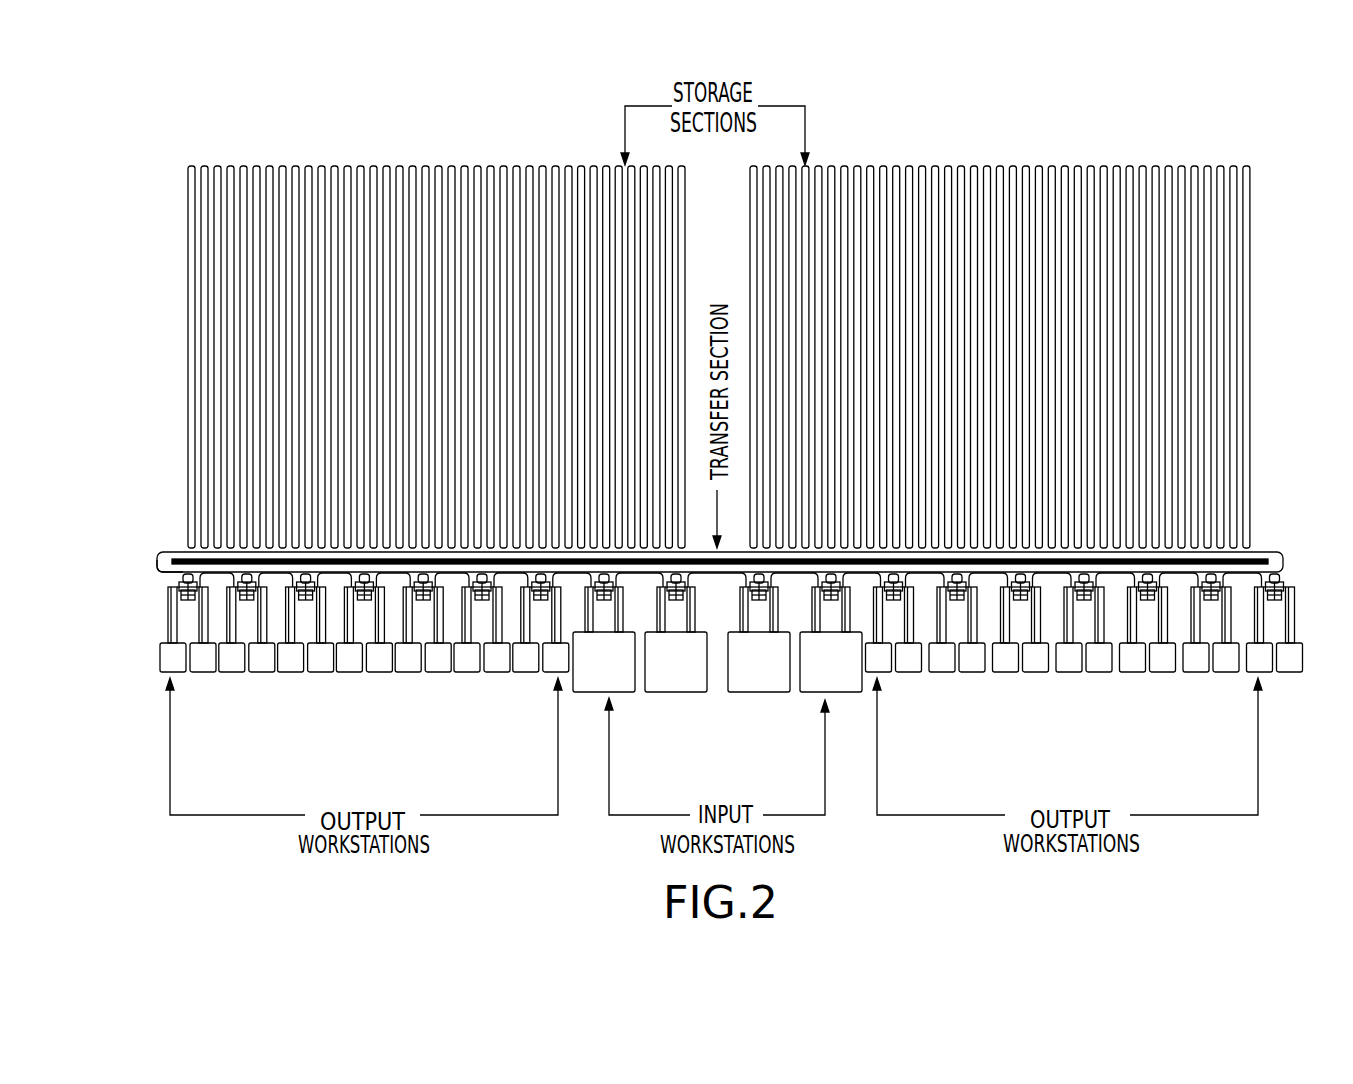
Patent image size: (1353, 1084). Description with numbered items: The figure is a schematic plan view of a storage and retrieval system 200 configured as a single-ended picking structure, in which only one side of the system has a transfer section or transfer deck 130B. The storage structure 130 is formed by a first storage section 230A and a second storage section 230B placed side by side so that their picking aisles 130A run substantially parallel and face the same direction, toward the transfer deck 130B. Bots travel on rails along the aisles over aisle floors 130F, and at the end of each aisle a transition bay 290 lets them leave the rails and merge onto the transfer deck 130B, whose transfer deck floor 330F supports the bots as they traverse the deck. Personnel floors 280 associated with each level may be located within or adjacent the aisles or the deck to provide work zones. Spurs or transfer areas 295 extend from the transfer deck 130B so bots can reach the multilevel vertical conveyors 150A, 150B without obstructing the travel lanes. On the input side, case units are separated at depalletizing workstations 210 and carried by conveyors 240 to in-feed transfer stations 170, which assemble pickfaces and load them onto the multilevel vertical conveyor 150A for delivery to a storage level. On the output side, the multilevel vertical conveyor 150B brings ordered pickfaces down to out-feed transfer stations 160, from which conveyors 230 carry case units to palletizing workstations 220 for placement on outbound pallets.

The picking aisle 130A is at (243, 165).
The transfer deck 130B is at (163, 552).
The aisle floor 130F is at (1222, 165).
The storage structure 130 is at (858, 166).
The storage and retrieval system 200 is at (1031, 320).
The personnel floor 280 is at (426, 166).
The first storage section 230A is at (492, 160).
The second storage section 230B is at (964, 160).
The conveyor 230 is at (170, 612).
The transition bay 290 is at (187, 552).
The transfer area 295 is at (178, 584).
The palletizing workstation 220 is at (160, 662).
The depalletizing workstation 210 is at (598, 692).
The multilevel vertical conveyor 150A is at (745, 580).
The multilevel vertical conveyor 150B is at (1262, 585).
The out-feed transfer station 160 is at (1263, 600).
The in-feed transfer station 170 is at (818, 600).
The conveyor 240 is at (848, 610).
The transfer deck floor 330F is at (1247, 560).